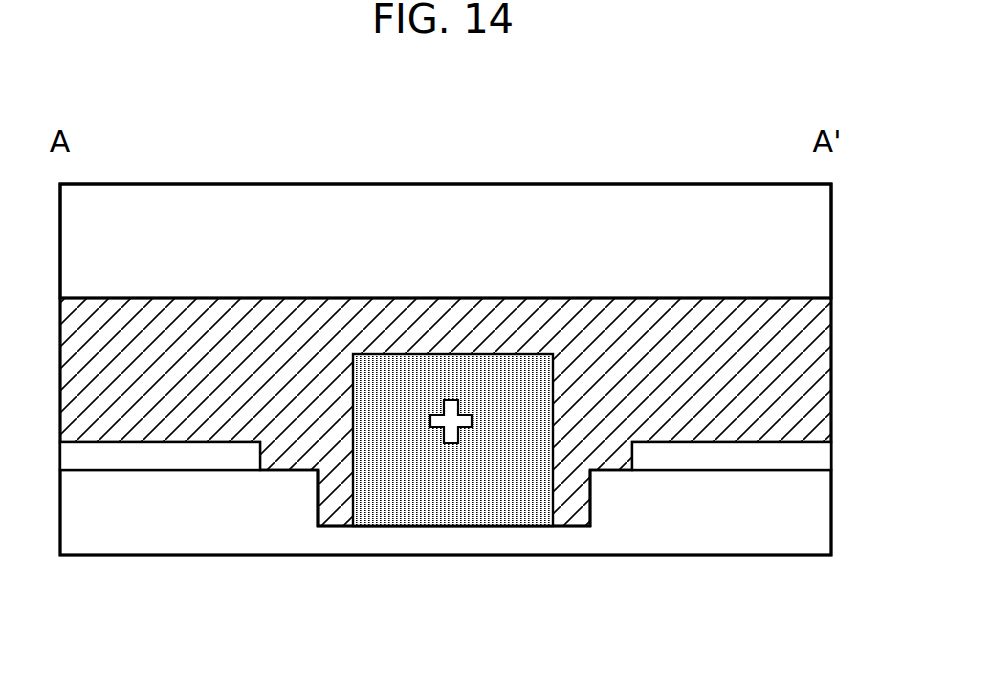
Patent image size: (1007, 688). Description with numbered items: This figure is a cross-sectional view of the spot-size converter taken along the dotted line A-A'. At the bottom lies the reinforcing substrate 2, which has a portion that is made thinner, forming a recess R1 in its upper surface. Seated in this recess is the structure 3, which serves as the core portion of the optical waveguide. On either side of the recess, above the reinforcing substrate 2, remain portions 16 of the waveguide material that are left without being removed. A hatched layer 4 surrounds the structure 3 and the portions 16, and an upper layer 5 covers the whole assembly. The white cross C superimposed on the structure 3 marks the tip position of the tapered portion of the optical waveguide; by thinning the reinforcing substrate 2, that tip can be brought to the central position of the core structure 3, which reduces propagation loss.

The reinforcing substrate 2 is at (755, 527).
The structure 3 is at (510, 507).
The insulating layer 4 is at (795, 358).
The protective layer 5 is at (795, 244).
The portion apart from the optical waveguide 16 is at (793, 460).
The center C is at (439, 446).
The recess R1 is at (319, 530).